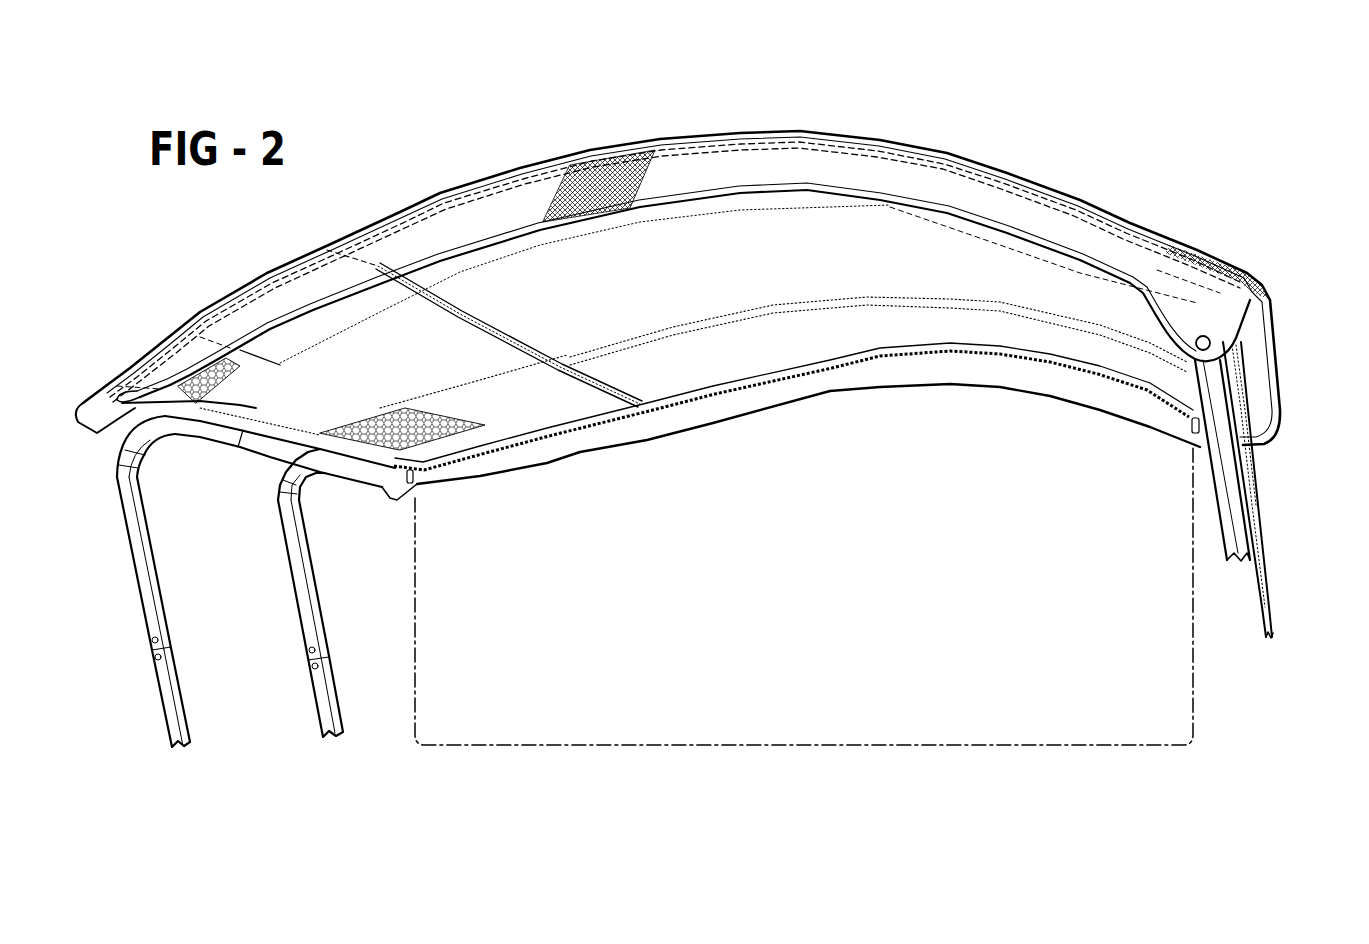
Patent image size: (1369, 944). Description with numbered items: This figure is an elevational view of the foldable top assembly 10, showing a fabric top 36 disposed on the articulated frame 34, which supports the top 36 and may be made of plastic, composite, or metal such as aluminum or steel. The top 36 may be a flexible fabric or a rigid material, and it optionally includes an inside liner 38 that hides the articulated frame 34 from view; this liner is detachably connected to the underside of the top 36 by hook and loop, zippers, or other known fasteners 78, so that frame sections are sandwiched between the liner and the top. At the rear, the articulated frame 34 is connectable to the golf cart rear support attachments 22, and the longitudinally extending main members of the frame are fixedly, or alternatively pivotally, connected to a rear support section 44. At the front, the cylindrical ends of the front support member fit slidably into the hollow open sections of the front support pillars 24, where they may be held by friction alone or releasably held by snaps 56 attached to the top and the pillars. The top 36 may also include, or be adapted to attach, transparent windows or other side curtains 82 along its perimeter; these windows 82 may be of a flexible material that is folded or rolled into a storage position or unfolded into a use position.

The foldable top assembly 10 is at (790, 100).
The top 36 is at (1007, 173).
The fasteners 78 is at (350, 223).
The snaps 56 is at (1203, 336).
The front support pillars 24 is at (1252, 480).
The rear support attachments 22 is at (190, 707).
The rear support section 44 is at (157, 565).
The articulated frame 34 is at (306, 482).
The inside liner 38 is at (240, 441).
The windows 82 is at (1193, 647).